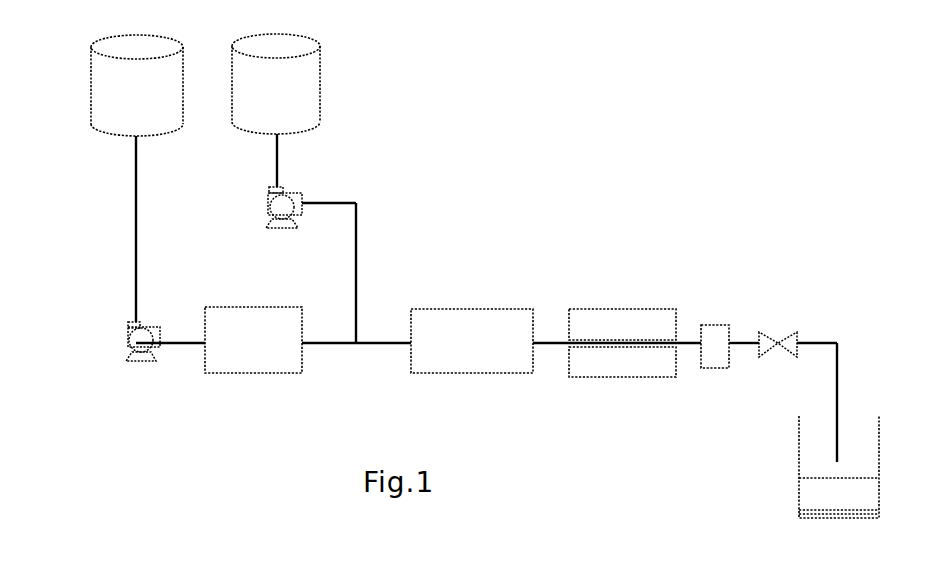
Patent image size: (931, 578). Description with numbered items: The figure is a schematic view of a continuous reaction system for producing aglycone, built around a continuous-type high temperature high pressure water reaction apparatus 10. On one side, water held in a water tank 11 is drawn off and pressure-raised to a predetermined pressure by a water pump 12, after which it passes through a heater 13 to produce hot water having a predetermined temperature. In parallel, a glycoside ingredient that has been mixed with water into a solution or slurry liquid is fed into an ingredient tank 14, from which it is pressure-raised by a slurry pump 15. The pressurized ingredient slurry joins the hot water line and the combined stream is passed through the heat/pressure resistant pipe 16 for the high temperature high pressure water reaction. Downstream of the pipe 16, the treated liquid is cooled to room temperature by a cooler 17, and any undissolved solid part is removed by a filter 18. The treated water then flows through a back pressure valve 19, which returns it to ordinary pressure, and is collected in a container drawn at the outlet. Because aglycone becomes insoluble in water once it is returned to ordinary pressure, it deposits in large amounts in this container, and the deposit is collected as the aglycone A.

The high temperature high pressure water reaction apparatus 10 is at (395, 82).
The water tank 11 is at (108, 103).
The water pump 12 is at (134, 350).
The heater 13 is at (260, 365).
The ingredient tank 14 is at (310, 102).
The slurry pump 15 is at (268, 208).
The heat/pressure resistant pipe for high temperature high pressure water reaction 16 is at (487, 363).
The cooler 17 is at (597, 372).
The filter 18 is at (713, 372).
The back pressure valve 19 is at (793, 332).
The aglycone A is at (795, 515).